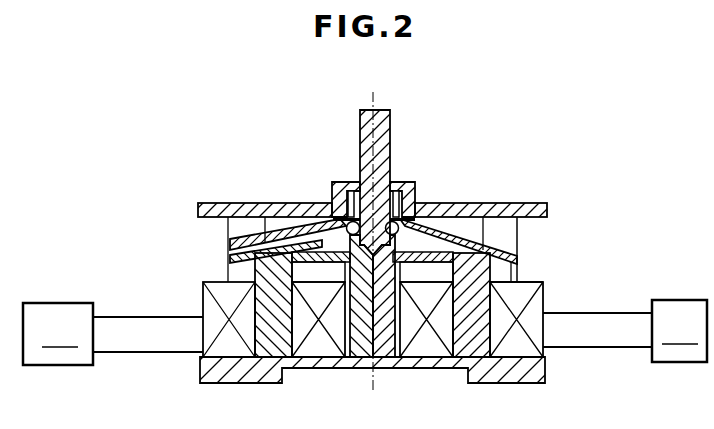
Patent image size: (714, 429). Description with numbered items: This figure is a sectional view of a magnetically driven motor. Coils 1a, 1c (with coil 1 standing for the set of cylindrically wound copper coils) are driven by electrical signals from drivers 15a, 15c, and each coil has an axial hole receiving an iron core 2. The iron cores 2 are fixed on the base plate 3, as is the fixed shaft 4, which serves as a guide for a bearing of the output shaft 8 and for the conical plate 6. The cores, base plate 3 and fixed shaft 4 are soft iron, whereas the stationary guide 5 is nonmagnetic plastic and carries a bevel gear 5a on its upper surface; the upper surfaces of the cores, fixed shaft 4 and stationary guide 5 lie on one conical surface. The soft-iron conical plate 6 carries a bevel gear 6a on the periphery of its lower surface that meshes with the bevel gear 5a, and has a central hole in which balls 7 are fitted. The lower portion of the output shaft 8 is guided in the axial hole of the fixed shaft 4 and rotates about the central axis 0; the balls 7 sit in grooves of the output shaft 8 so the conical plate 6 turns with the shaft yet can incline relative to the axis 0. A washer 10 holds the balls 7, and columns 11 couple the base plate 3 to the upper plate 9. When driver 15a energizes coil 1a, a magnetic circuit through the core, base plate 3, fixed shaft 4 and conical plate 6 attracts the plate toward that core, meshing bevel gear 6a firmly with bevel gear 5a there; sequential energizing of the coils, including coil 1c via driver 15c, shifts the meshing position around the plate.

The central axis 0 is at (370, 254).
The coil 1 is at (535, 334).
The coil 1a is at (532, 284).
The coil 1c is at (203, 308).
The iron core 2 is at (520, 318).
The base plate 3 is at (200, 372).
The fixed shaft 4 is at (360, 358).
The stationary guide 5 is at (234, 268).
The bevel gear 5a is at (228, 250).
The conical plate 6 is at (450, 238).
The bevel gear 6a is at (518, 269).
The balls 7 is at (413, 213).
The output shaft 8 is at (390, 132).
The upper plate 9 is at (548, 206).
The washer 10 is at (332, 207).
The columns 11 is at (520, 239).
The driver 15a is at (625, 331).
The driver 15c is at (113, 334).